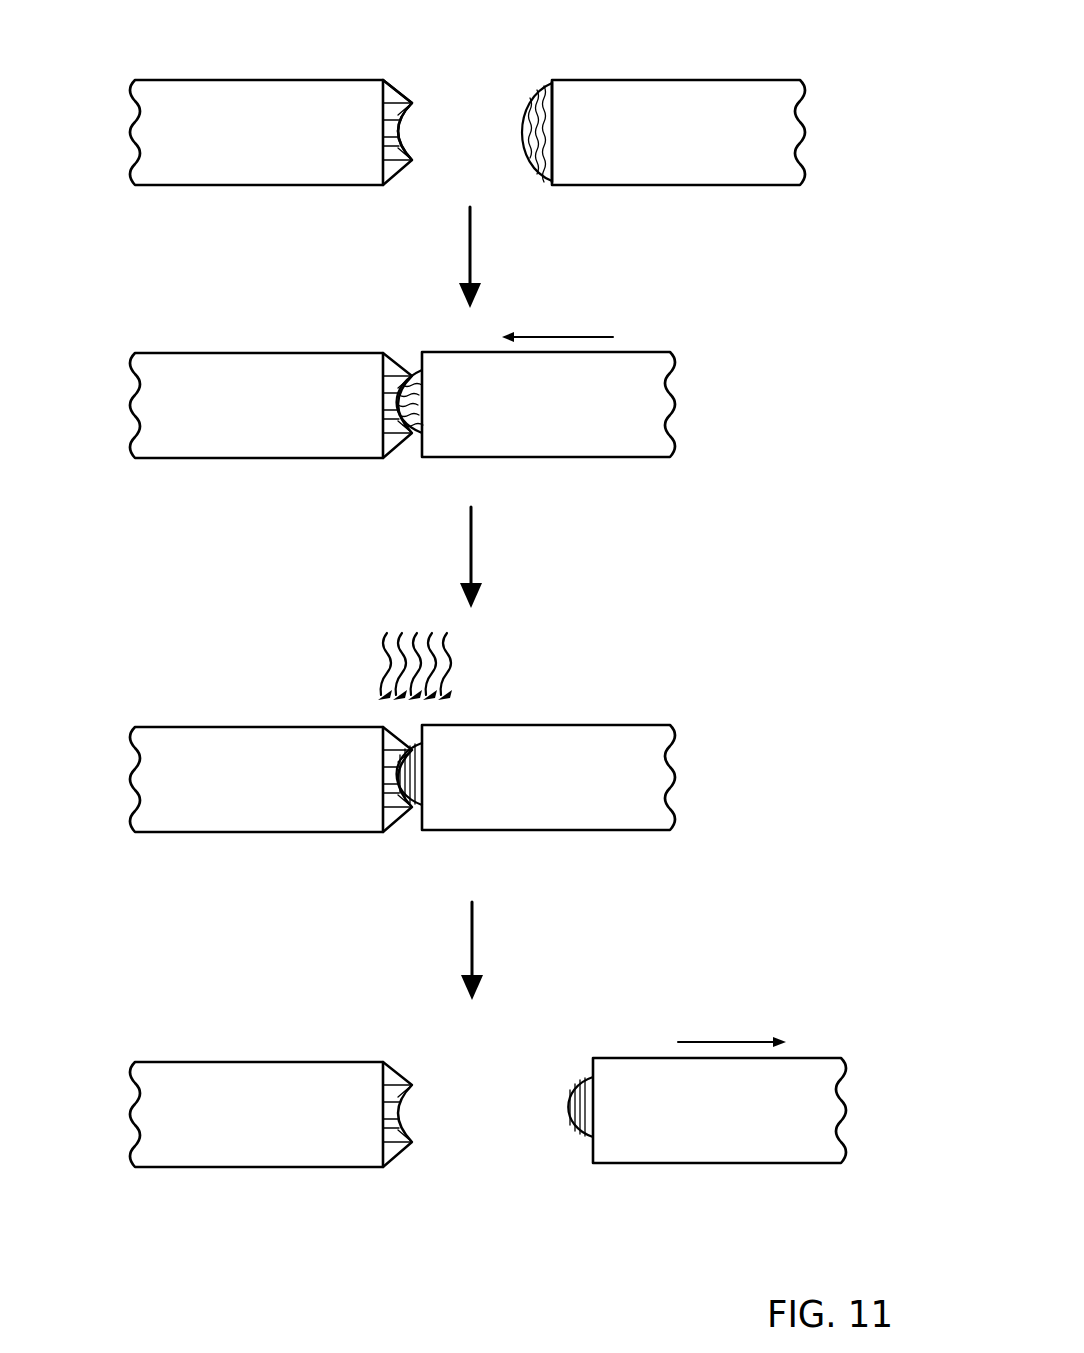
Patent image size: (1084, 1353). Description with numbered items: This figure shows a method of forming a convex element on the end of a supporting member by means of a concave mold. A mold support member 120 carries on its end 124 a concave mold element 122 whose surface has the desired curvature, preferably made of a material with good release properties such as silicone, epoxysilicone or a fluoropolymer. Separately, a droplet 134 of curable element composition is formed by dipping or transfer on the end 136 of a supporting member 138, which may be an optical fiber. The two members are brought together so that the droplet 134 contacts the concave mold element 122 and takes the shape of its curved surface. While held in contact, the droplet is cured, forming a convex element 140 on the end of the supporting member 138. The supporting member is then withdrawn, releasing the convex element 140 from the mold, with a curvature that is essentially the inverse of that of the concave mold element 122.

The mold support member 120 is at (188, 190).
The concave mold element 122 is at (398, 77).
The end of the mold support member 124 is at (381, 135).
The droplet 134 is at (522, 85).
The end of the supporting member 136 is at (555, 133).
The supporting member 138 is at (745, 186).
The convex element 140 is at (571, 1133).